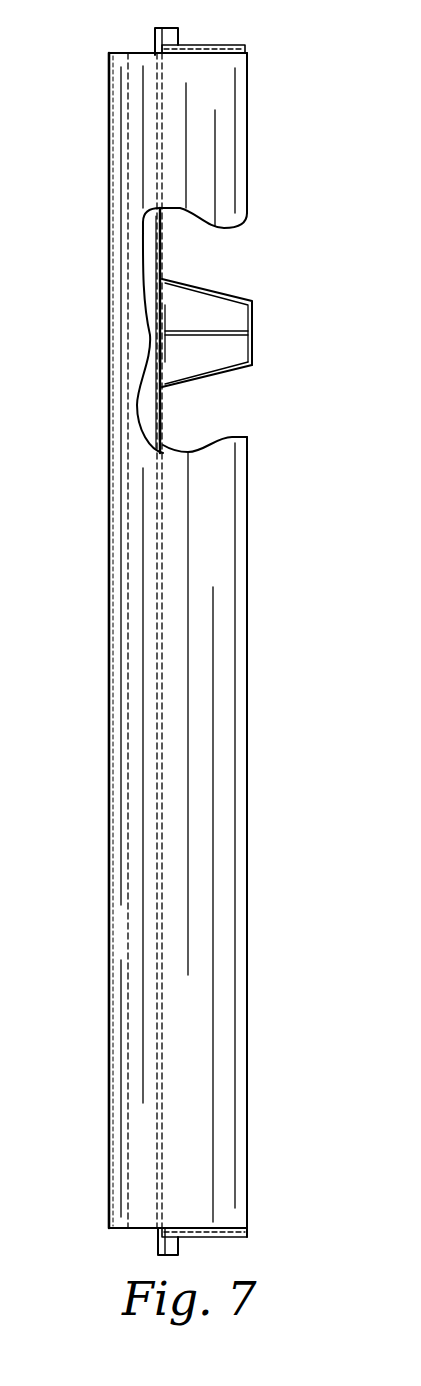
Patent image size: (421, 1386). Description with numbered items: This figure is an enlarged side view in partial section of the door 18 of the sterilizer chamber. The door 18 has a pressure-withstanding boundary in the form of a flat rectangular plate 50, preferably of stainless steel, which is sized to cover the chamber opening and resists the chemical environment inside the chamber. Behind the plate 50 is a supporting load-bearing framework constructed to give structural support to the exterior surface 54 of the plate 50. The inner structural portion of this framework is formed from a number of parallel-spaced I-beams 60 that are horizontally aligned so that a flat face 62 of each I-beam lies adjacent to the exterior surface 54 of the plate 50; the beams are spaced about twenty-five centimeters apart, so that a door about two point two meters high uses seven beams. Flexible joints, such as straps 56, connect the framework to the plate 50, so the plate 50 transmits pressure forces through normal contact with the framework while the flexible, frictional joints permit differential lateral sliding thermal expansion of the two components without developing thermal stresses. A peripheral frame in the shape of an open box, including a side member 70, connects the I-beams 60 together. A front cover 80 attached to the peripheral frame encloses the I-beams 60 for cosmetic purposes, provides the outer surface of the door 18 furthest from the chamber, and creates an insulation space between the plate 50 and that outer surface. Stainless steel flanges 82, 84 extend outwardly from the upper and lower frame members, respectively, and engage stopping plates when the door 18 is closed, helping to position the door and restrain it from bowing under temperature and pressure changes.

The door 18 is at (97, 163).
The plate 50 is at (163, 262).
The exterior surface 54 is at (178, 428).
The straps 56 is at (222, 294).
The I-beams 60 is at (205, 335).
The flat face 62 is at (148, 353).
The side member 70 is at (222, 610).
The front cover 80 is at (248, 725).
The flange 82 is at (215, 47).
The flange 84 is at (225, 1237).